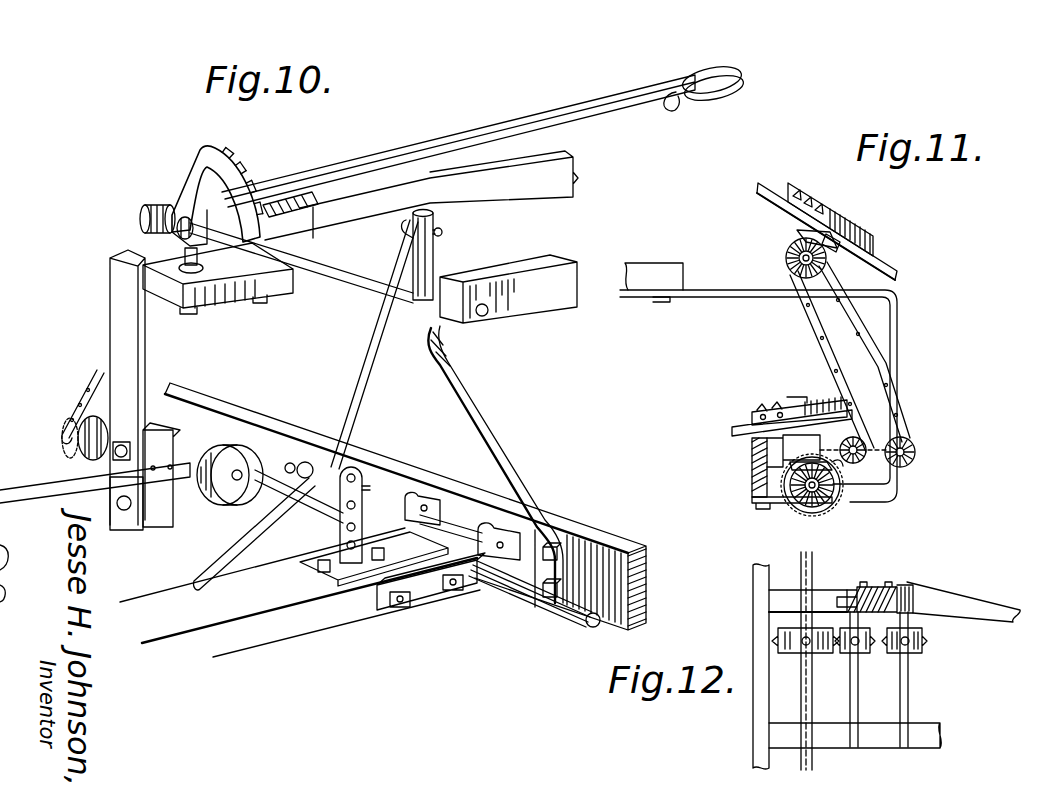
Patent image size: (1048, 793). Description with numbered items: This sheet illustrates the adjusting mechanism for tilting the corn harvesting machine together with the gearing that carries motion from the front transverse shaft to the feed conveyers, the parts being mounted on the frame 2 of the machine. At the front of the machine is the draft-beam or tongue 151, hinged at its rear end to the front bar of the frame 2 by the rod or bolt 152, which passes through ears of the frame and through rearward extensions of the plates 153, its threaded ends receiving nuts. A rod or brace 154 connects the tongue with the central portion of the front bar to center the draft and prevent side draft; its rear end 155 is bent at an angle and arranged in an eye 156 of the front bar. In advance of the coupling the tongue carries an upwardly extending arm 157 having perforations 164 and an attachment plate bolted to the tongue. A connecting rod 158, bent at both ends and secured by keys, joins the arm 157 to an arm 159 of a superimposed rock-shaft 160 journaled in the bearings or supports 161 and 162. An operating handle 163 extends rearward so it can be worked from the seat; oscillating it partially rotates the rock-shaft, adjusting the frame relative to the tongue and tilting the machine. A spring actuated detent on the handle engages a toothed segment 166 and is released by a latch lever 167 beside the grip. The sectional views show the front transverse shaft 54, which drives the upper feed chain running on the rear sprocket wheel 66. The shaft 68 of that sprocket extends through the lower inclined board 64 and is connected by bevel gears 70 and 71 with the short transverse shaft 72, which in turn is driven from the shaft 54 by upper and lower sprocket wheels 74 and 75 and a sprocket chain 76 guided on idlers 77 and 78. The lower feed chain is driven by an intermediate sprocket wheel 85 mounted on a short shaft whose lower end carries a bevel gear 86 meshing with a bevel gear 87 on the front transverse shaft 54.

In FIG. 10, the base frame beam 2 is at (443, 483).
In FIG. 11, the base frame beam 2 is at (752, 468).
In FIG. 12, the base frame beam 2 is at (760, 622).
In FIG. 10, the front transverse shaft 54 is at (520, 592).
In FIG. 11, the front transverse shaft 54 is at (797, 508).
In FIG. 12, the front transverse shaft 54 is at (807, 703).
In FIG. 11, the inclined board or member 64 is at (897, 262).
In FIG. 12, the inclined board or member 64 is at (963, 602).
In FIG. 11, the rear sprocket wheel 66 is at (863, 224).
In FIG. 12, the rear sprocket wheel 66 is at (875, 597).
In FIG. 11, the shaft of upper sprocket wheel 68 is at (847, 250).
In FIG. 11, the bevel gear 70 is at (802, 230).
In FIG. 11, the bevel gear 71 is at (790, 268).
In FIG. 11, the short transverse shaft 72 is at (785, 247).
In FIG. 11, the upper sprocket wheel 74 is at (822, 287).
In FIG. 10, the lower sprocket wheel 75 is at (217, 450).
In FIG. 11, the lower sprocket wheel 75 is at (815, 513).
In FIG. 12, the lower sprocket wheel 75 is at (822, 653).
In FIG. 10, the sprocket chain 76 is at (80, 392).
In FIG. 11, the sprocket chain 76 is at (872, 344).
In FIG. 10, the idler 77 is at (77, 442).
In FIG. 11, the idler 77 is at (916, 446).
In FIG. 12, the idler 77 is at (918, 651).
In FIG. 11, the idler 78 is at (848, 443).
In FIG. 12, the idler 78 is at (862, 653).
In FIG. 11, the intermediate sprocket wheel 85 is at (770, 410).
In FIG. 11, the bevel gear 86 is at (783, 492).
In FIG. 11, the bevel gear 87 is at (805, 513).
In FIG. 10, the draft-beam or tongue 151 is at (300, 592).
In FIG. 10, the rod or bolt 152 is at (478, 537).
In FIG. 10, the plates 153 is at (438, 595).
In FIG. 10, the rod or brace 154 is at (222, 557).
In FIG. 10, the rear end of rod or brace 155 is at (290, 463).
In FIG. 10, the eye 156 is at (310, 460).
In FIG. 10, the upwardly extending arm 157 is at (340, 537).
In FIG. 10, the connecting rod 158 is at (356, 399).
In FIG. 10, the arm of rock-shaft 159 is at (434, 247).
In FIG. 10, the rock-shaft 160 is at (346, 272).
In FIG. 10, the bearing or support 161 is at (547, 297).
In FIG. 10, the bearing or support 162 is at (203, 310).
In FIG. 10, the operating handle 163 is at (514, 124).
In FIG. 10, the perforations 164 is at (357, 524).
In FIG. 10, the toothed segment 166 is at (240, 176).
In FIG. 10, the latch lever 167 is at (696, 110).